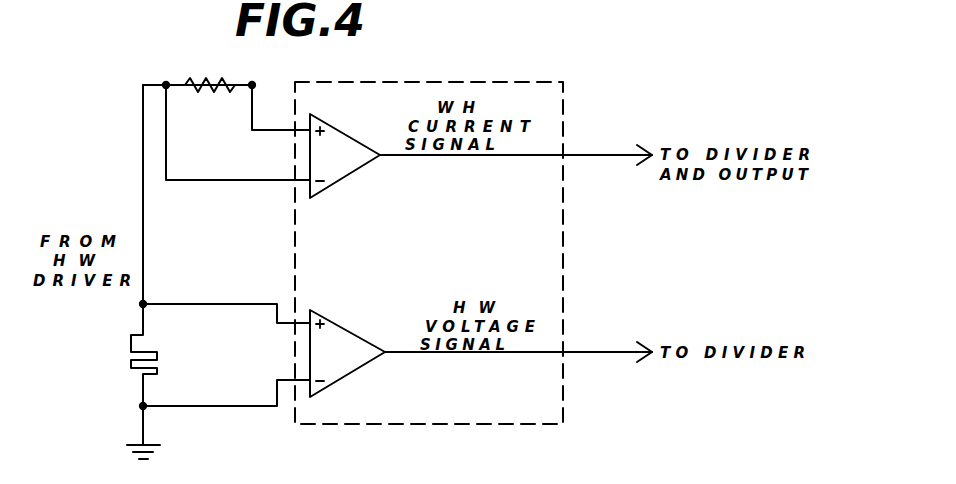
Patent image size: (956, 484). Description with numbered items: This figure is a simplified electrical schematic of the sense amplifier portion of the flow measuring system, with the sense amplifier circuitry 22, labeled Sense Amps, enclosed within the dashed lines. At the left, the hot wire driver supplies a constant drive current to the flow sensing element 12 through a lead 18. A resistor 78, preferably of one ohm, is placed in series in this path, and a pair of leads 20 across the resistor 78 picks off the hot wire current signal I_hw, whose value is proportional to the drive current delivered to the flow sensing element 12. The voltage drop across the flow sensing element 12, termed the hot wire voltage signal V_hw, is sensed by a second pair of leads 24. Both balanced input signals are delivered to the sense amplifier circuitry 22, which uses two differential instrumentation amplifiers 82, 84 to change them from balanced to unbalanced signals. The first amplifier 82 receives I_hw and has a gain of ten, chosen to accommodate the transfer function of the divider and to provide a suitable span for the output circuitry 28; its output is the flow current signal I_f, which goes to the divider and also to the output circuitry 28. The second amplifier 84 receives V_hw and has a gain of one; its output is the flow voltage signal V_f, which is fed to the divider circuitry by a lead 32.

The flow sensing element 12 is at (128, 363).
The lead 18 is at (143, 136).
The leads 20 is at (267, 180).
The sense amplifier circuitry 22 is at (452, 82).
The leads 24 is at (280, 381).
The output circuitry 28 is at (602, 157).
The lead 32 is at (602, 354).
The resistor 78 is at (195, 85).
The first differential instrumentation amplifier 82 is at (344, 178).
The second differential instrumentation amplifier 84 is at (341, 327).